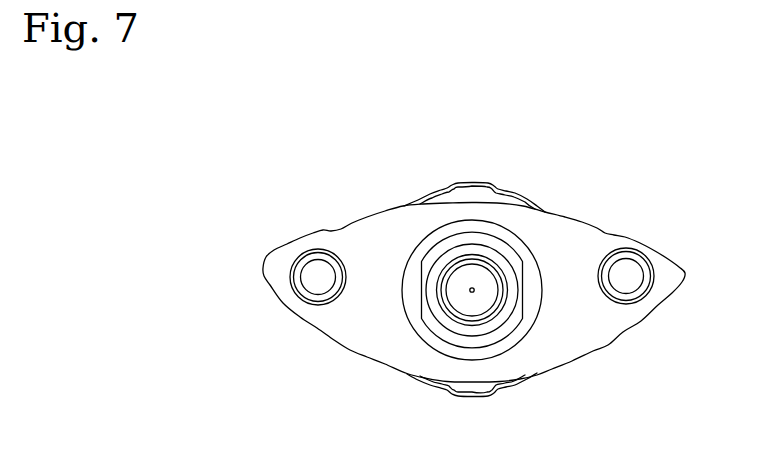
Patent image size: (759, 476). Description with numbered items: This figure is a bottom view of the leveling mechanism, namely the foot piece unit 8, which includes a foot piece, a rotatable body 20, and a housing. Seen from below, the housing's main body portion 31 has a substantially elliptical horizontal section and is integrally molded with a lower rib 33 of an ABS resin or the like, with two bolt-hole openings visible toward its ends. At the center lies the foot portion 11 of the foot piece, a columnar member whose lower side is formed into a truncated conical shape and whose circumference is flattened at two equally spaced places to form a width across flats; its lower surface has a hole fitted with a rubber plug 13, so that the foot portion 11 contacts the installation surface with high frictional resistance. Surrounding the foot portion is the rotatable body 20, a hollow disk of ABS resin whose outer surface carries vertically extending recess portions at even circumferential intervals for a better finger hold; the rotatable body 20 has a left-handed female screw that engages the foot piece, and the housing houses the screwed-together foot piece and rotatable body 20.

The foot piece unit 8 is at (274, 194).
The foot portion 11 is at (531, 268).
The rubber plug 13 is at (481, 277).
The rotatable body 20 is at (512, 388).
The main body portion 31 is at (578, 332).
The lower rib 33 is at (410, 328).